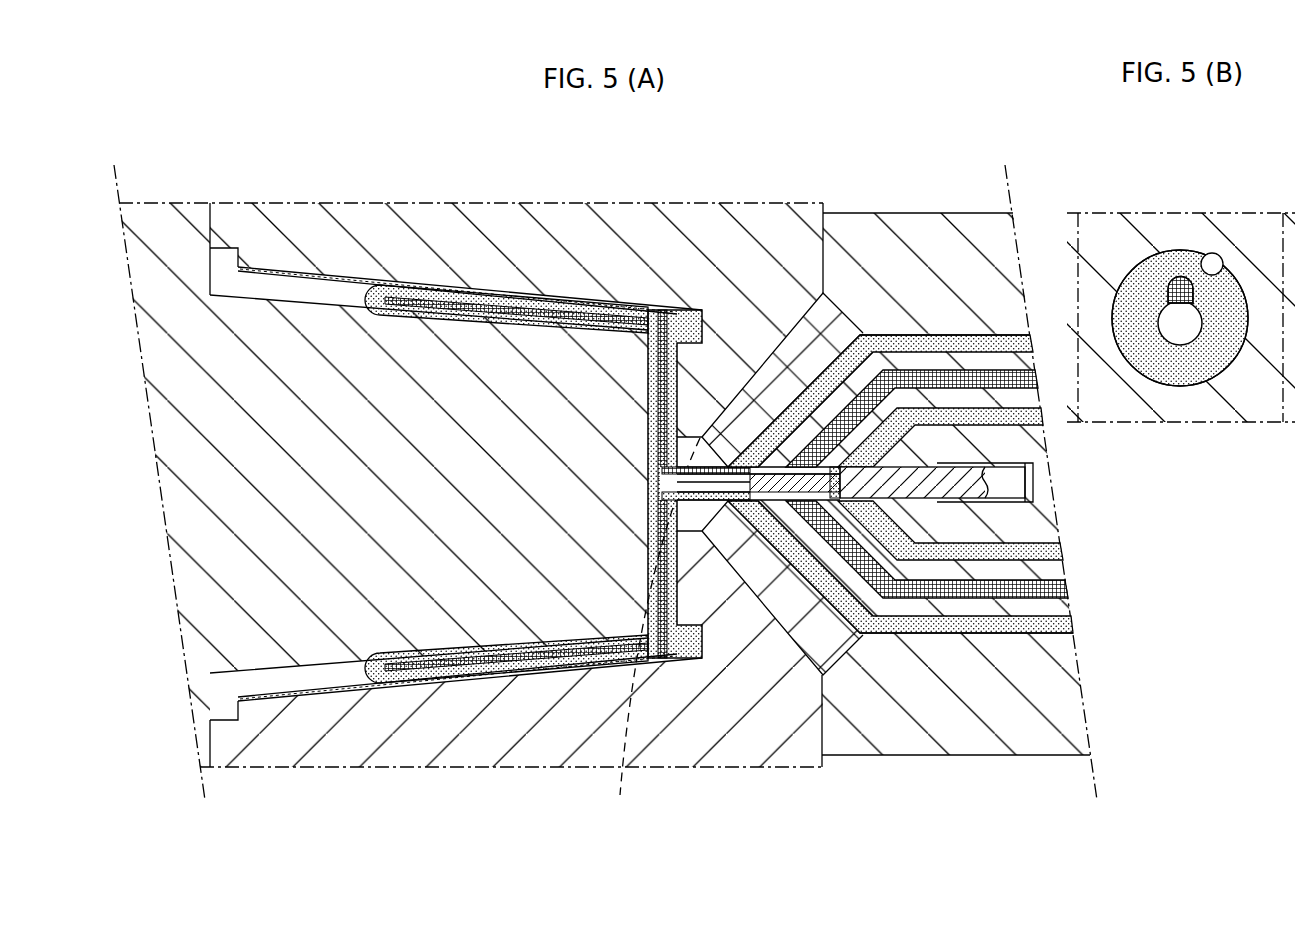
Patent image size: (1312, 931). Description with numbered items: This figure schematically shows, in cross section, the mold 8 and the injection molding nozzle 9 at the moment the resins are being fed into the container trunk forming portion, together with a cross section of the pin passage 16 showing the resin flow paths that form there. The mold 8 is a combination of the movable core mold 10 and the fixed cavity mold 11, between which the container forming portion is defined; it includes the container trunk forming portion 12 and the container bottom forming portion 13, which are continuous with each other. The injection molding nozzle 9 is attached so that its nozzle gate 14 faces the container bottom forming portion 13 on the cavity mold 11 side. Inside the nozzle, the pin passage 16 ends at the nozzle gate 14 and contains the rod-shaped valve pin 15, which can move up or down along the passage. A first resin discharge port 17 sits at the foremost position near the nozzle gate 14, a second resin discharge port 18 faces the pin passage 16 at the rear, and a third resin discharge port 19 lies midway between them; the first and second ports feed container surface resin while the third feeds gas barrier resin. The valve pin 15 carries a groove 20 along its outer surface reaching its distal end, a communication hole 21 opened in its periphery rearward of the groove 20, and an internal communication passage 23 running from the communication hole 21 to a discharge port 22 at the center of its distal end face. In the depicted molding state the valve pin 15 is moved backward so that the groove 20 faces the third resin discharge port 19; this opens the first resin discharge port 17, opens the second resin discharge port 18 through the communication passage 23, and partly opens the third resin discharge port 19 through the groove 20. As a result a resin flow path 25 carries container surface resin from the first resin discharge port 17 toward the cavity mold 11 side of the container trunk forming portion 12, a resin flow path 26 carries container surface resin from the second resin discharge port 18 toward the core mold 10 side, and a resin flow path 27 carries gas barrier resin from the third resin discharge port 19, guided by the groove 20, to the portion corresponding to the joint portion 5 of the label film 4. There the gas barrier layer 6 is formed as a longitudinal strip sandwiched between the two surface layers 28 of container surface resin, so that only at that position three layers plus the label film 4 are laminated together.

In FIG. 5A, the label film 4 is at (432, 287).
In FIG. 5A, the joint portion of the label film 5 is at (540, 316).
In FIG. 5A, the gas barrier layer 6 is at (585, 318).
In FIG. 5A, the mold 8 is at (488, 782).
In FIG. 5A, the injection molding nozzle 9 is at (1024, 780).
In FIG. 5B, the injection molding nozzle 9 is at (1100, 233).
In FIG. 5A, the core mold 10 is at (322, 597).
In FIG. 5A, the cavity mold 11 is at (395, 745).
In FIG. 5A, the container trunk forming portion 12 is at (272, 682).
In FIG. 5A, the container bottom forming portion 13 is at (516, 645).
In FIG. 5A, the nozzle gate 14 is at (698, 503).
In FIG. 5A, the valve pin 15 is at (966, 468).
In FIG. 5A, the pin passage 16 is at (902, 503).
In FIG. 5B, the pin passage 16 is at (1222, 262).
In FIG. 5A, the first resin discharge port 17 is at (735, 501).
In FIG. 5A, the second resin discharge port 18 is at (884, 470).
In FIG. 5A, the third resin discharge port 19 is at (812, 467).
In FIG. 5A, the groove 20 is at (765, 467).
In FIG. 5A, the communication hole 21 is at (857, 467).
In FIG. 5A, the discharge port 22 is at (745, 501).
In FIG. 5A, the communication passage 23 is at (790, 503).
In FIG. 5B, the resin flow path 25 is at (1216, 352).
In FIG. 5B, the resin flow path 26 is at (1172, 340).
In FIG. 5B, the resin flow path 27 is at (1180, 278).
In FIG. 5A, the surface layers 28 is at (493, 300).